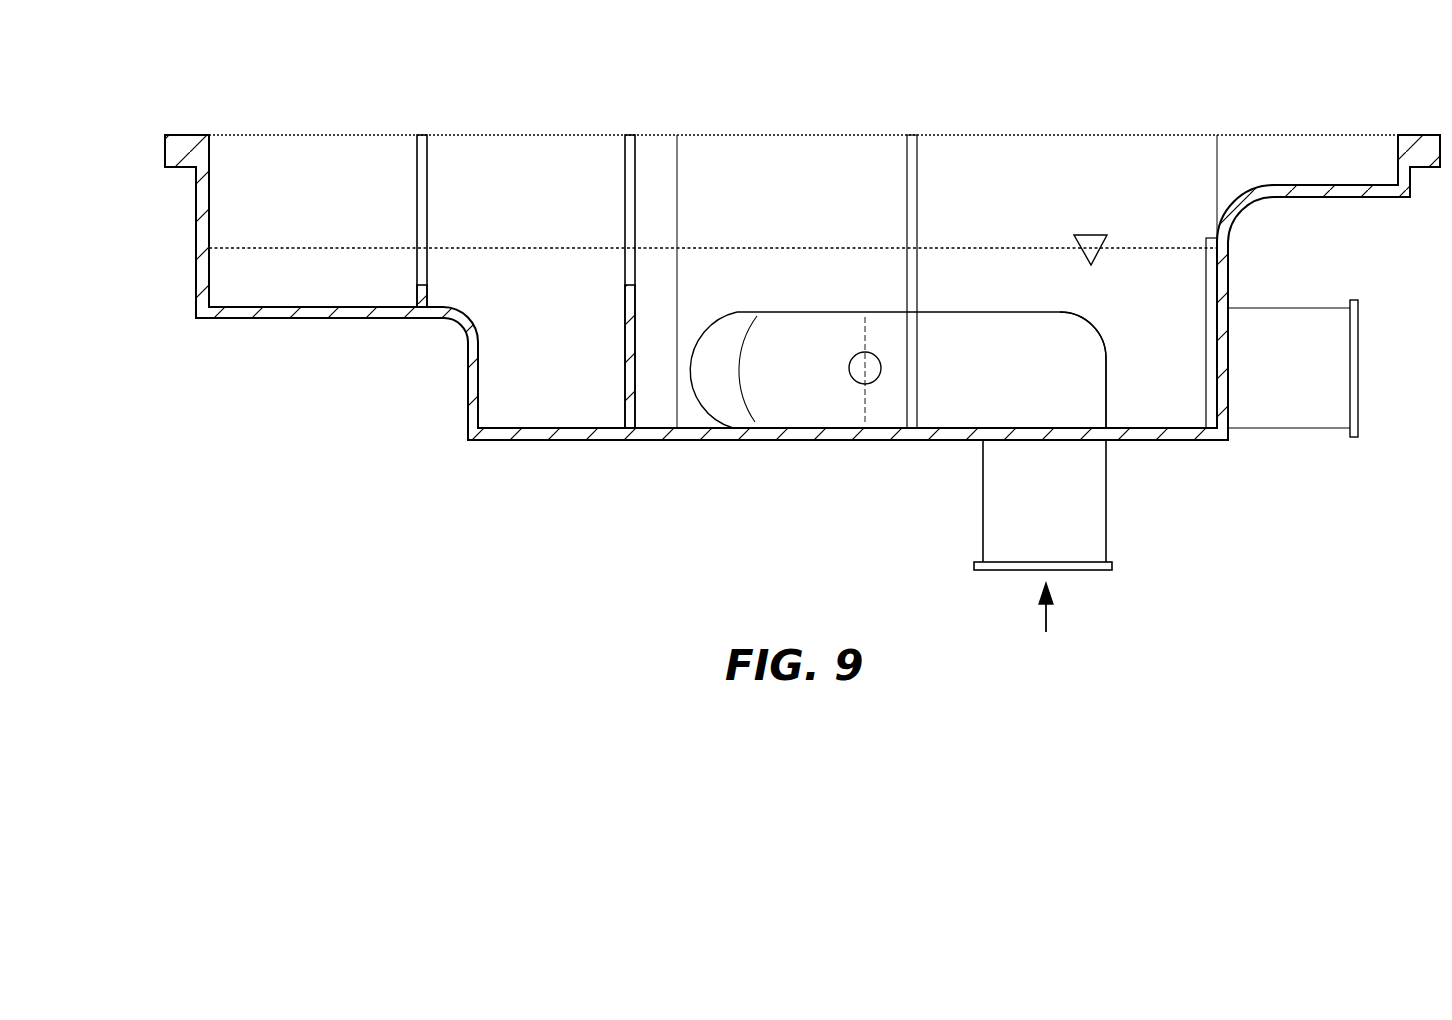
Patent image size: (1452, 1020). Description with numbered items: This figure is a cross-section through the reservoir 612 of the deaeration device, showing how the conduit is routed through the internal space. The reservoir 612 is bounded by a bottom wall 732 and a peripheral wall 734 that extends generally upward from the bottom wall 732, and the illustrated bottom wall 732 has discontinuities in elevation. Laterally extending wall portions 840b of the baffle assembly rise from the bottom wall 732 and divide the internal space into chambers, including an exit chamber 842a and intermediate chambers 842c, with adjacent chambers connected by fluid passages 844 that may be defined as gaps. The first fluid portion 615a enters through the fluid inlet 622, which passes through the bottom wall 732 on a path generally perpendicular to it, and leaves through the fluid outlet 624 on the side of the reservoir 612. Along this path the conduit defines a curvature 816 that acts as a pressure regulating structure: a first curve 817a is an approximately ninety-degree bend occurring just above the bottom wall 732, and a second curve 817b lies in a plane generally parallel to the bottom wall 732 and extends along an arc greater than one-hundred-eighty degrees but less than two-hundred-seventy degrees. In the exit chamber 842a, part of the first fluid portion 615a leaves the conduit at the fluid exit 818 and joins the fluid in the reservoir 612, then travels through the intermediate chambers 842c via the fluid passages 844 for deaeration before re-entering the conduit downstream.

The reservoir 612 is at (201, 104).
The fluid passages 844 is at (398, 164).
The intermediate chambers 842c is at (336, 204).
The exit chamber 842a is at (809, 204).
The peripheral wall 734 is at (197, 268).
The laterally extending wall portions 840b is at (417, 298).
The bottom wall 732 is at (545, 440).
The curvature 816 is at (955, 300).
The second curve 817b is at (714, 325).
The first curve 817a is at (1094, 337).
The fluid exit 818 is at (858, 355).
The first fluid portion 615a is at (1159, 286).
The fluid outlet 624 is at (1253, 308).
The fluid inlet 622 is at (1106, 528).